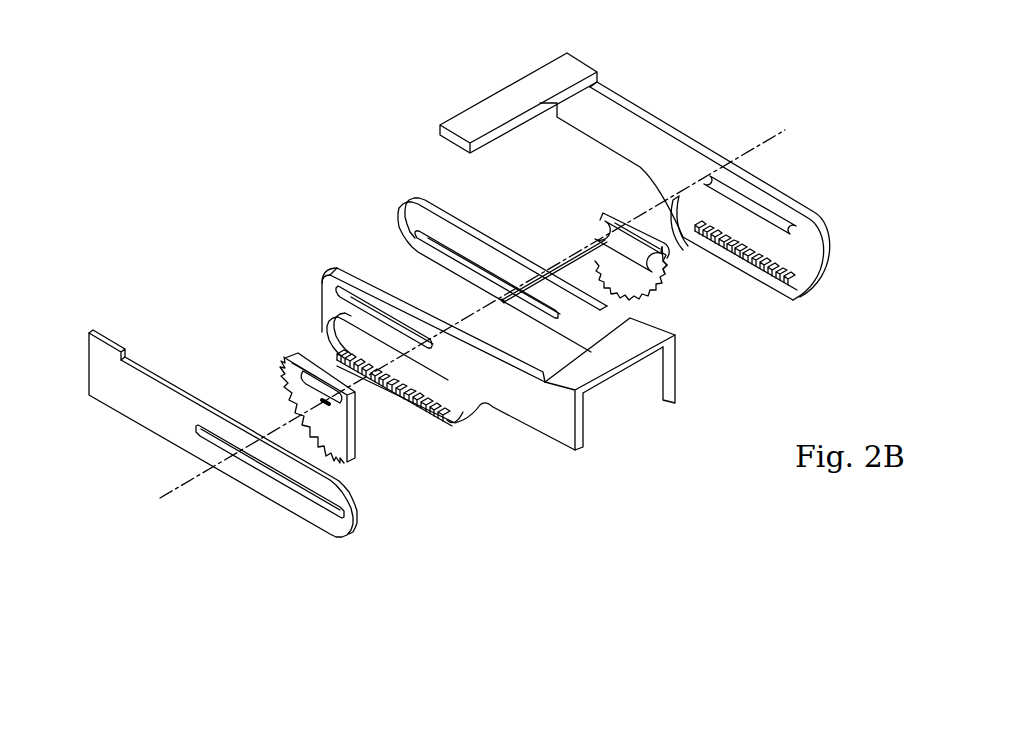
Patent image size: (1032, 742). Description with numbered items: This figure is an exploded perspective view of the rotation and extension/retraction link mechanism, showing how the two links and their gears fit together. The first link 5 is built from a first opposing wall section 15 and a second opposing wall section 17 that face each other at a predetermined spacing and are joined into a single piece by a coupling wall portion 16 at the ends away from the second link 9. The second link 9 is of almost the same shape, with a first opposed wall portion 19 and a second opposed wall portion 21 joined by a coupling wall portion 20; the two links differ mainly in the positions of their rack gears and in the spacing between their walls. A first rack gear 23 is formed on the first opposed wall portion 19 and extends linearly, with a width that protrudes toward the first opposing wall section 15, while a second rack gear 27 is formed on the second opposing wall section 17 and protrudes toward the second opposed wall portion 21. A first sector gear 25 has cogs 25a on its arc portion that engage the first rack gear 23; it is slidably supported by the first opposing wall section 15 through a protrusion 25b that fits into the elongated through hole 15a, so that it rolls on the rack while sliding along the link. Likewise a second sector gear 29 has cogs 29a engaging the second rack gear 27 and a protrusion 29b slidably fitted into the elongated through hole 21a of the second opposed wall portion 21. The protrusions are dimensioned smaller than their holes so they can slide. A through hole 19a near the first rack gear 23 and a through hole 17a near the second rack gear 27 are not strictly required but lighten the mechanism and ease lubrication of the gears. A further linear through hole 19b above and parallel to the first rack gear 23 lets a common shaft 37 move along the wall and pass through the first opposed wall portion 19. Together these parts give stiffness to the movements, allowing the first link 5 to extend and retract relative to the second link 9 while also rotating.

The first link 5 is at (122, 330).
The first opposing wall section 15 is at (120, 400).
The elongated through hole 15a is at (316, 505).
The first sector gear 25 is at (335, 432).
The cogs 25a is at (300, 393).
The protrusion 25b is at (298, 355).
The first opposed wall portion 19 is at (326, 272).
The through hole 19a is at (460, 415).
The through hole 19b is at (352, 292).
The first rack gear 23 is at (432, 412).
The second opposed wall portion 21 is at (400, 213).
The elongated through hole 21a is at (453, 232).
The common shaft 37 is at (577, 250).
The second sector gear 29 is at (688, 297).
The cogs 29a is at (670, 262).
The protrusion 29b is at (623, 213).
The coupling wall portion 16 is at (514, 88).
The second opposing wall section 17 is at (648, 112).
The through hole 17a is at (790, 208).
The second rack gear 27 is at (792, 302).
The coupling wall portion 20 is at (591, 374).
The second link 9 is at (673, 378).